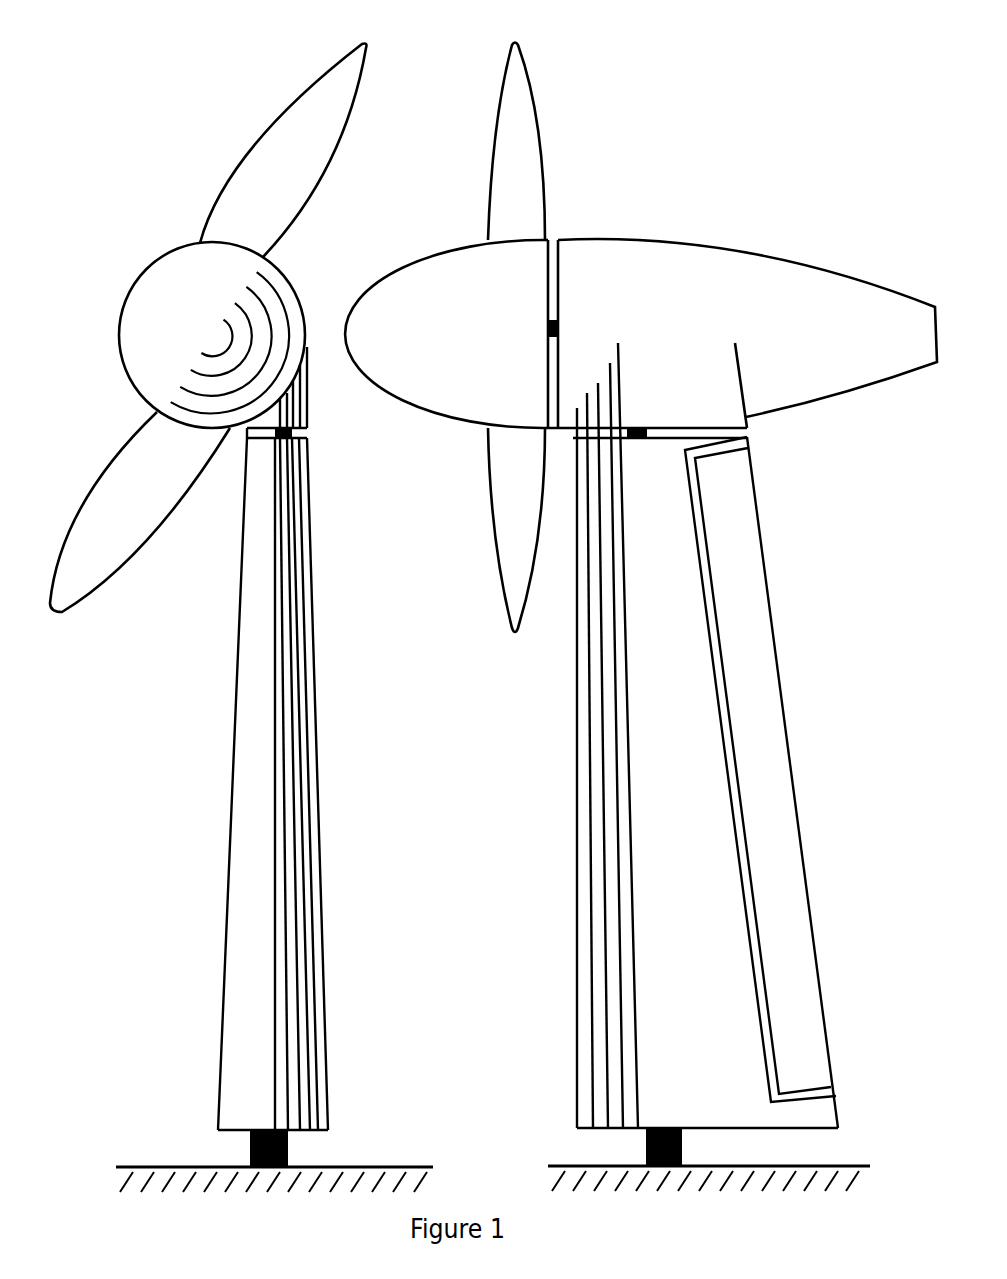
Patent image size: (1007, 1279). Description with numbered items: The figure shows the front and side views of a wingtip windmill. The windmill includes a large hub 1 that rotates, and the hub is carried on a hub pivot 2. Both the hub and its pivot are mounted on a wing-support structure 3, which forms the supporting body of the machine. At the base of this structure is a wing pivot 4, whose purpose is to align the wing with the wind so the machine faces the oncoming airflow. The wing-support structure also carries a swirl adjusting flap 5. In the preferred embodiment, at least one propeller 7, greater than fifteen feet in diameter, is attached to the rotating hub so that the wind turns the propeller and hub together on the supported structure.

The hub 1 is at (448, 325).
The hub pivot 2 is at (640, 432).
The wing-support structure 3 is at (688, 886).
The wing pivot 4 is at (646, 1150).
The swirl adjusting flap 5 is at (765, 785).
The propeller 7 is at (515, 580).